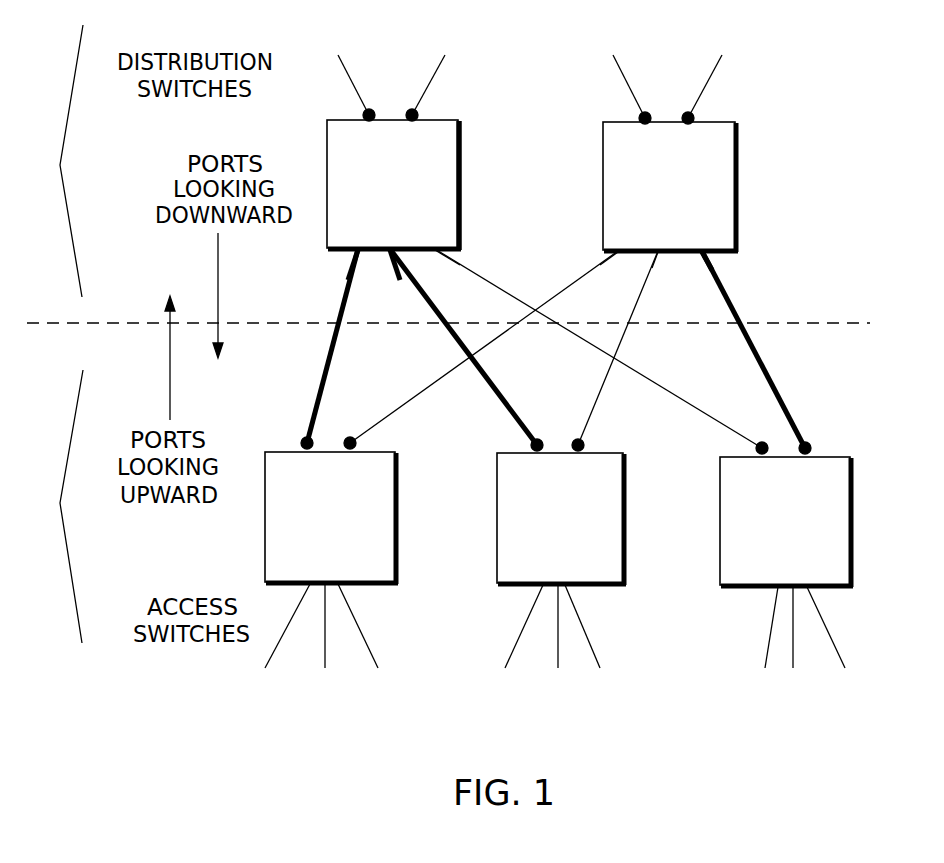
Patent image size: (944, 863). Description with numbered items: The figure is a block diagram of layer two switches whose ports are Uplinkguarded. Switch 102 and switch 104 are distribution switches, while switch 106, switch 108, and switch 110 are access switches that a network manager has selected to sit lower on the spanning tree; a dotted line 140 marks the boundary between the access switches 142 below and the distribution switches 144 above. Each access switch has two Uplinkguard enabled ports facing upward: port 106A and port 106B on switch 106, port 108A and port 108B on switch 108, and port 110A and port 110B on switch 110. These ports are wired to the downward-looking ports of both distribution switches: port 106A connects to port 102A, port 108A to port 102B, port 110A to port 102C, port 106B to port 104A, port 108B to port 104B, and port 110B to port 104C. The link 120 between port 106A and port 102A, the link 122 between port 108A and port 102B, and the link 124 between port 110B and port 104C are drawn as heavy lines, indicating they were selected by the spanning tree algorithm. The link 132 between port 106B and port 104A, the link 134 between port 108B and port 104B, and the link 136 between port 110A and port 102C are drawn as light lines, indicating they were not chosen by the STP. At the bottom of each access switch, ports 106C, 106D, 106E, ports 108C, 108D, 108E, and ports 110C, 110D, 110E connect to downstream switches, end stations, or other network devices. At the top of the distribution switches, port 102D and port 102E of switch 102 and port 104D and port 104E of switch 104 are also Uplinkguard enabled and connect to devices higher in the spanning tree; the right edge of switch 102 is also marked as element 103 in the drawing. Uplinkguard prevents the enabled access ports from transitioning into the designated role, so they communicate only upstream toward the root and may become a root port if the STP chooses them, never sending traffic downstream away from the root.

The switch 102 is at (327, 128).
The distribution switch 103 is at (462, 129).
The switch 104 is at (738, 129).
The switch 106 is at (398, 500).
The switch 108 is at (626, 460).
The switch 110 is at (853, 462).
The port 102A is at (350, 253).
The port 102B is at (393, 252).
The port 102C is at (433, 253).
The port 102D is at (362, 112).
The port 102E is at (419, 112).
The port 104A is at (618, 253).
The port 104B is at (661, 253).
The port 104C is at (718, 255).
The port 104D is at (638, 114).
The port 104E is at (695, 114).
The Uplinkguard enabled port 106A is at (300, 441).
The Uplinkguard enabled port 106B is at (357, 443).
The port 106C is at (265, 666).
The port 106D is at (325, 656).
The port 106E is at (378, 666).
The Uplinkguard enabled port 108A is at (530, 443).
The Uplinkguard enabled port 108B is at (584, 445).
The port 108C is at (505, 666).
The port 108D is at (558, 656).
The port 108E is at (600, 666).
The Uplinkguard enabled port 110A is at (756, 443).
The Uplinkguard enabled port 110B is at (811, 447).
The port 110C is at (765, 666).
The port 110D is at (793, 656).
The port 110E is at (845, 666).
The link 120 is at (332, 348).
The link 122 is at (456, 346).
The link 124 is at (752, 350).
The link 132 is at (455, 370).
The link 134 is at (599, 390).
The link 136 is at (590, 343).
The dotted line 140 is at (60, 323).
The access switches 142 is at (60, 503).
The distribution switches 144 is at (60, 165).